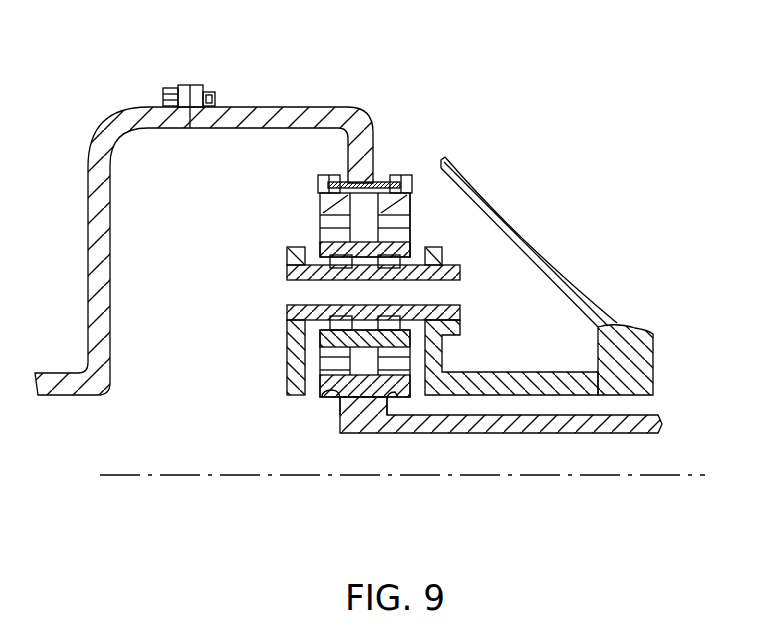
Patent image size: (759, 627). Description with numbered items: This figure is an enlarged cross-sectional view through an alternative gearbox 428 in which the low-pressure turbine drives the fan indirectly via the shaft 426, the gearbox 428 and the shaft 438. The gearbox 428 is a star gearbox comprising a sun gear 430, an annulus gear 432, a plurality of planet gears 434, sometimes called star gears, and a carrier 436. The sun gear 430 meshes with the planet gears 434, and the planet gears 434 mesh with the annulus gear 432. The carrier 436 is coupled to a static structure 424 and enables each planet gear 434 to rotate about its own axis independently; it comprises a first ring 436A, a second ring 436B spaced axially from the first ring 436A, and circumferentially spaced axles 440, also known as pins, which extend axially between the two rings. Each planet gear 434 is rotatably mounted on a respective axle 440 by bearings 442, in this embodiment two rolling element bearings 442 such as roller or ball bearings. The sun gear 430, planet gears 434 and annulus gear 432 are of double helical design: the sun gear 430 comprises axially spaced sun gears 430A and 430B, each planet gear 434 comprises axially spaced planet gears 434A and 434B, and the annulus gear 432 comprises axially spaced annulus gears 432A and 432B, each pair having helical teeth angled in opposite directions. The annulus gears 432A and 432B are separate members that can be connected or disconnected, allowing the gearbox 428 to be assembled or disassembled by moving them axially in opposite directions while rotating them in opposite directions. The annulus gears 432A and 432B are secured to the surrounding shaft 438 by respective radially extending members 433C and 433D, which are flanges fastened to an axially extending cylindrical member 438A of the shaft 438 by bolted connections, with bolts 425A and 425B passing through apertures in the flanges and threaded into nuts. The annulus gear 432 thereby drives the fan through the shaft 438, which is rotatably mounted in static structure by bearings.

The static structure 424 is at (415, 203).
The fastener 425A is at (332, 175).
The fastener 425B is at (397, 173).
The shaft 426 is at (536, 433).
The gearbox 428 is at (250, 433).
The sun gear 430 is at (356, 447).
The sun gear 430A is at (322, 396).
The sun gear 430B is at (370, 378).
The annulus gear 432 is at (413, 212).
The annulus gear 432A is at (322, 210).
The annulus gear 432B is at (412, 232).
The radially extending member 433C is at (330, 186).
The radially extending member 433D is at (410, 200).
The planet gear 434 is at (403, 260).
The planet gear 434A is at (320, 237).
The planet gear 434B is at (410, 248).
The carrier 436 is at (378, 430).
The first ring 436A is at (437, 353).
The second ring 436B is at (290, 340).
The shaft 438 is at (272, 120).
The axially extending member 438A is at (347, 180).
The axle 440 is at (287, 278).
The bearing 442 is at (287, 315).